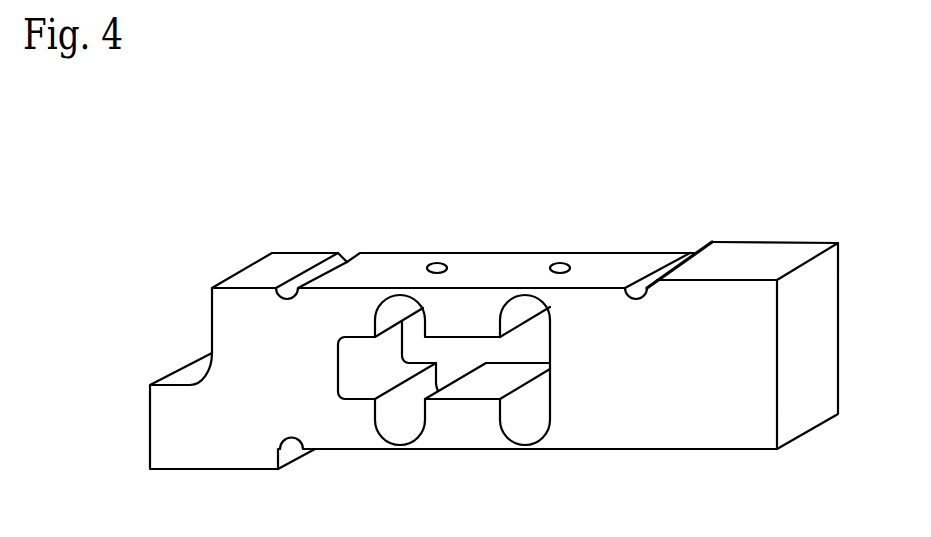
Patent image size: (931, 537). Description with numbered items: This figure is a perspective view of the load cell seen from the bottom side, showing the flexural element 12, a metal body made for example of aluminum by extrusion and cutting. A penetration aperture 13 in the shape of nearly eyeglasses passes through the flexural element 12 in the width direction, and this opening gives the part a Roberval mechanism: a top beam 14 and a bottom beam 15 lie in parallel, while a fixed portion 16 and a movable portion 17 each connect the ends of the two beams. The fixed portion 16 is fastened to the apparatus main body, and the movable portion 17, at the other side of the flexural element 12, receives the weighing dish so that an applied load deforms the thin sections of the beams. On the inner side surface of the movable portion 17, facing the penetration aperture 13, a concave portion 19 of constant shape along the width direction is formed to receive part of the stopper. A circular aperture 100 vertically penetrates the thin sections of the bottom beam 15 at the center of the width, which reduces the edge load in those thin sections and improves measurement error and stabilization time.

The flexural element 12 is at (623, 228).
The penetration aperture 13 is at (528, 347).
The top beam 14 is at (460, 435).
The bottom beam 15 is at (498, 272).
The fixed portion 16 is at (742, 255).
The movable portion 17 is at (183, 362).
The concave portion 19 is at (360, 372).
The circular aperture 100 is at (437, 264).